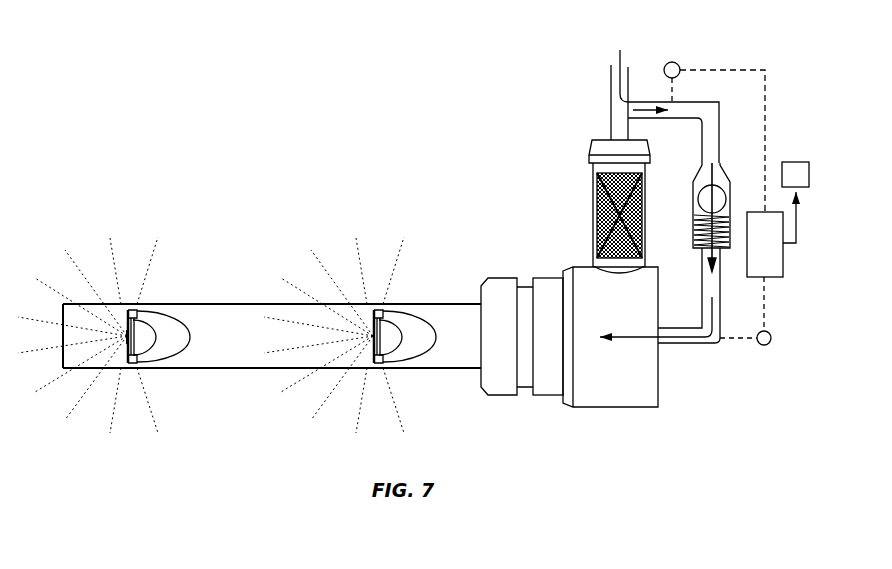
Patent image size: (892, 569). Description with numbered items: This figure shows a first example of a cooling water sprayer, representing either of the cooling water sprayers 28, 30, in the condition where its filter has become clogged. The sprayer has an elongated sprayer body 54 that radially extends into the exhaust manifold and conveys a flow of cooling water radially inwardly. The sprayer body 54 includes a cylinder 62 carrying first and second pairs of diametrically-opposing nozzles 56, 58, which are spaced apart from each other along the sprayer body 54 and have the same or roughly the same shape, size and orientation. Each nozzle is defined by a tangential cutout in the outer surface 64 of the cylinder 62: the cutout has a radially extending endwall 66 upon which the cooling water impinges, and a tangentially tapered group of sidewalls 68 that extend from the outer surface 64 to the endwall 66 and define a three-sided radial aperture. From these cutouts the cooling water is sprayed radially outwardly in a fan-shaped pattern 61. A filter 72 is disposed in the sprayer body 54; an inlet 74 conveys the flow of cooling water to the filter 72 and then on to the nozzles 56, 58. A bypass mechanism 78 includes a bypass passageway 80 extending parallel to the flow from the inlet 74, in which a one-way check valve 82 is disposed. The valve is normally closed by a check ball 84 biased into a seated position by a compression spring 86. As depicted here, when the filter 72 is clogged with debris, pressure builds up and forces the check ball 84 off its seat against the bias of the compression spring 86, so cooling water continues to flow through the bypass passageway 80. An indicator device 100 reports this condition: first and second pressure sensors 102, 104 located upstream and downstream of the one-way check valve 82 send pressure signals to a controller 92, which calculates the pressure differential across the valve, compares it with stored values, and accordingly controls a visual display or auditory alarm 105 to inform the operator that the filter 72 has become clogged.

The cooling water sprayer 28 is at (567, 250).
The cooling water sprayer 30 is at (490, 150).
The sprayer body 54 is at (233, 312).
The first pair of nozzles 56 is at (133, 357).
The second pair of nozzles 58 is at (425, 305).
The fan-shaped pattern 61 is at (82, 236).
The cylinder 62 is at (225, 372).
The outer surface 64 is at (247, 322).
The endwall 66 is at (125, 350).
The tangentially tapered group of sidewalls 68 is at (170, 345).
The filter 72 is at (590, 218).
The inlet 74 is at (620, 128).
The bypass mechanism 78 is at (718, 58).
The bypass passageway 80 is at (700, 118).
The one-way check valve 82 is at (694, 230).
The check ball 84 is at (702, 197).
The compression spring 86 is at (695, 249).
The controller 92 is at (783, 270).
The indicator device 100 is at (780, 78).
The first pressure sensor 102 is at (668, 64).
The second pressure sensor 104 is at (768, 345).
The visual display or auditory alarm 105 is at (795, 162).